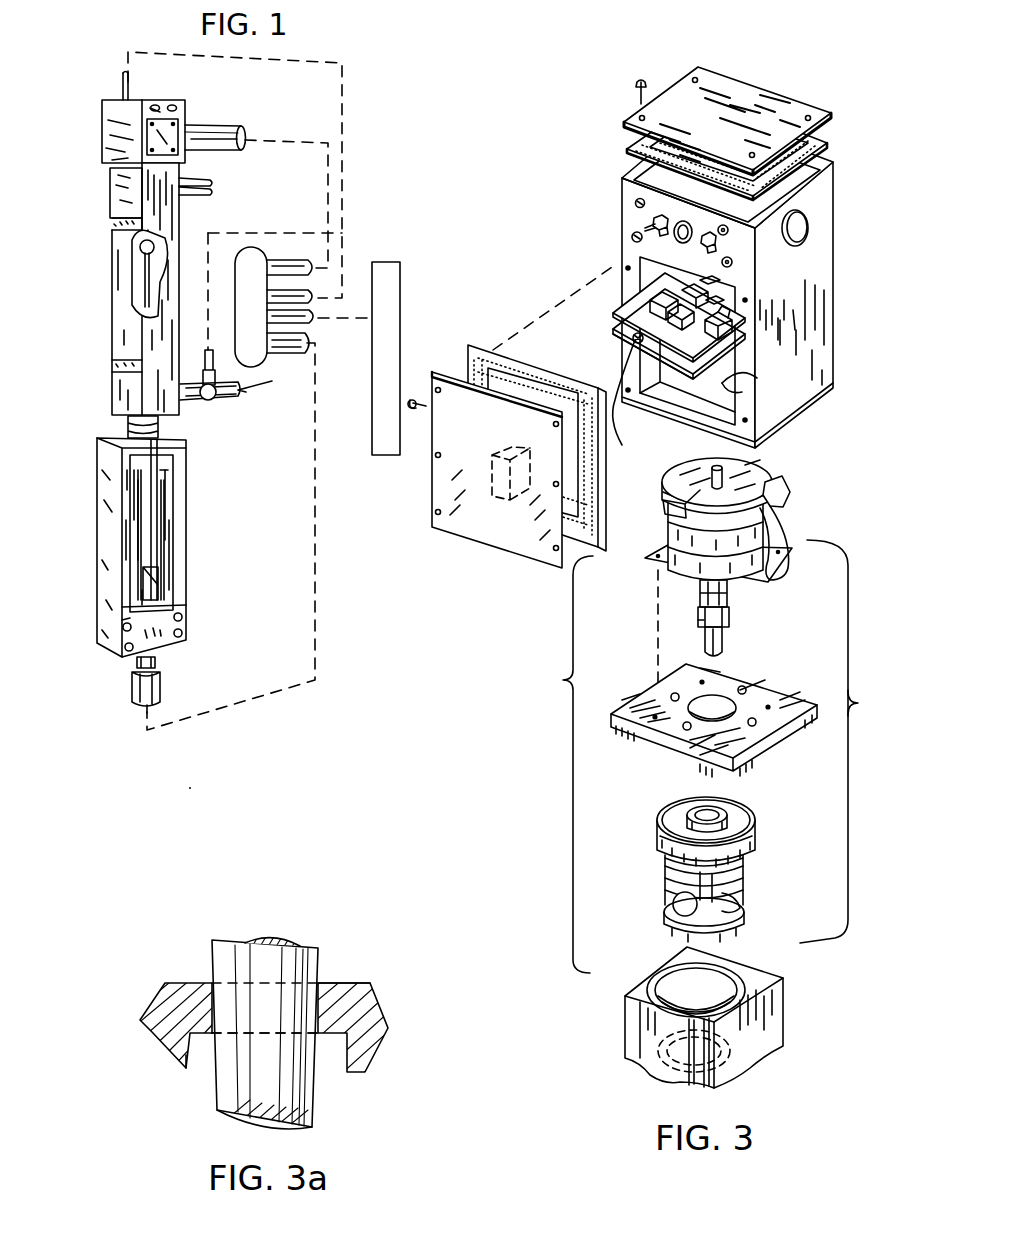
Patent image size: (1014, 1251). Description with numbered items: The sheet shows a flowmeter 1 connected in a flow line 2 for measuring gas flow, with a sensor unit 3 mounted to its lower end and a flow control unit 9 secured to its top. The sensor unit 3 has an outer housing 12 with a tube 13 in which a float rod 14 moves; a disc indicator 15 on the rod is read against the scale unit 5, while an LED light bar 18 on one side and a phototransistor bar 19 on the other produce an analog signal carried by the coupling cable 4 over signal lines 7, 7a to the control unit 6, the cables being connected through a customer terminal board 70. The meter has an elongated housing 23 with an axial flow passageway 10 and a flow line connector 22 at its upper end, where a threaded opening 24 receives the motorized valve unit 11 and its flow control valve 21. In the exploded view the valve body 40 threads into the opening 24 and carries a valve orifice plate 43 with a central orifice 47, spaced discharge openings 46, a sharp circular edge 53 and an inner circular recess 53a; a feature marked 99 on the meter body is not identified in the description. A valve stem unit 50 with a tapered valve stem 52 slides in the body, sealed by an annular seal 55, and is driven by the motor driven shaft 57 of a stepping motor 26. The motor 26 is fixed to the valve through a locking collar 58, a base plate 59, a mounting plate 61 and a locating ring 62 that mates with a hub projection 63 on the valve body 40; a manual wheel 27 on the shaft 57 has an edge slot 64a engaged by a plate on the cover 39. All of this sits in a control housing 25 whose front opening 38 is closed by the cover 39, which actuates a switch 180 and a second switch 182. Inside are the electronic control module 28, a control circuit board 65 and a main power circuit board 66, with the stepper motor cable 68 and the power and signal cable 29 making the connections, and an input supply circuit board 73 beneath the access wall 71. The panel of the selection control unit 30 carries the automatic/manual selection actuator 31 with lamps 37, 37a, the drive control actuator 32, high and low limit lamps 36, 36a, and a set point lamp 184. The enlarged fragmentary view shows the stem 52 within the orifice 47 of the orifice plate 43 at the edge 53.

In FIG. 1, the flowmeter 1 is at (110, 320).
In FIG. 1, the flow line 2 is at (194, 195).
In FIG. 1, the sensor unit 3 is at (190, 598).
In FIG. 1, the coupling cable 4 is at (130, 690).
In FIG. 1, the scale unit 5 is at (162, 505).
In FIG. 1, the control unit 6 is at (396, 458).
In FIG. 1, the signal line 7 is at (195, 655).
In FIG. 1, the signal line 7a is at (165, 665).
In FIG. 1, the flow control unit 9 is at (148, 116).
In FIG. 1, the flow passageway 10 is at (135, 260).
In FIG. 3, the motorized valve unit 11 is at (561, 764).
In FIG. 1, the outer housing 12 is at (188, 478).
In FIG. 1, the tube 13 is at (150, 575).
In FIG. 1, the float rod 14 is at (145, 276).
In FIG. 1, the disc indicator 15 is at (194, 499).
In FIG. 1, the LED light bar 18 is at (142, 535).
In FIG. 1, the phototransistor bar 19 is at (162, 548).
In FIG. 3, the flow control valve 21 is at (869, 703).
In FIG. 3a, the flow control valve 21 is at (340, 972).
In FIG. 3, the flow line connector 22 is at (770, 968).
In FIG. 3, the housing 23 is at (729, 1017).
In FIG. 3, the threaded opening 24 is at (806, 222).
In FIG. 1, the control housing 25 is at (112, 147).
In FIG. 3, the control housing 25 is at (806, 312).
In FIG. 3, the stepping motor 26 is at (694, 533).
In FIG. 3, the manual motor operator 27 is at (710, 523).
In FIG. 3, the electronic control module 28 is at (693, 341).
In FIG. 1, the power and signal cable 29 is at (225, 132).
In FIG. 1, the selection control unit 30 is at (161, 104).
In FIG. 3, the selection control unit 30 is at (622, 178).
In FIG. 1, the automatic/manual selection actuator 31 is at (150, 110).
In FIG. 3, the automatic/manual selection actuator 31 is at (652, 222).
In FIG. 1, the drive control actuator 32 is at (174, 106).
In FIG. 3, the drive control actuator 32 is at (700, 243).
In FIG. 3, the high limit lamp 36 is at (729, 232).
In FIG. 3, the low limit lamp 36a is at (733, 262).
In FIG. 3, the lamp 37 is at (634, 202).
In FIG. 3, the lamp 37a is at (631, 237).
In FIG. 3, the opening 38 is at (750, 384).
In FIG. 1, the cover 39 is at (180, 147).
In FIG. 3, the cover 39 is at (480, 540).
In FIG. 3, the valve body 40 is at (668, 892).
In FIG. 3, the valve orifice plate 43 is at (678, 910).
In FIG. 3a, the valve orifice plate 43 is at (372, 1002).
In FIG. 3, the openings 46 is at (748, 908).
In FIG. 3a, the central orifice 47 is at (308, 1012).
In FIG. 3, the valve stem unit 50 is at (697, 622).
In FIG. 3, the valve stem 52 is at (724, 638).
In FIG. 3a, the valve stem 52 is at (303, 1115).
In FIG. 3a, the circular edge 53 is at (210, 985).
In FIG. 3a, the circular recess 53a is at (188, 1060).
In FIG. 3, the annular seal 55 is at (730, 600).
In FIG. 3, the motor driven shaft 57 is at (710, 470).
In FIG. 3, the locking collar 58 is at (677, 865).
In FIG. 3, the base plate 59 is at (527, 510).
In FIG. 3, the mounting plate 61 is at (650, 560).
In FIG. 3, the locating ring 62 is at (712, 582).
In FIG. 3, the hub projection 63 is at (722, 820).
In FIG. 3, the edge slot 64a is at (680, 495).
In FIG. 3, the control circuit board 65 is at (610, 336).
In FIG. 3, the main power circuit board 66 is at (618, 311).
In FIG. 3, the stepper motor cable 68 is at (829, 721).
In FIG. 1, the terminal board 70 is at (276, 250).
In FIG. 3, the access wall 71 is at (782, 108).
In FIG. 3, the input supply circuit board 73 is at (745, 205).
In FIG. 3, the hidden bore 99 is at (745, 1022).
In FIG. 3, the switch 180 is at (634, 340).
In FIG. 3, the second switch 182 is at (628, 396).
In FIG. 3, the set point lamp 184 is at (684, 222).